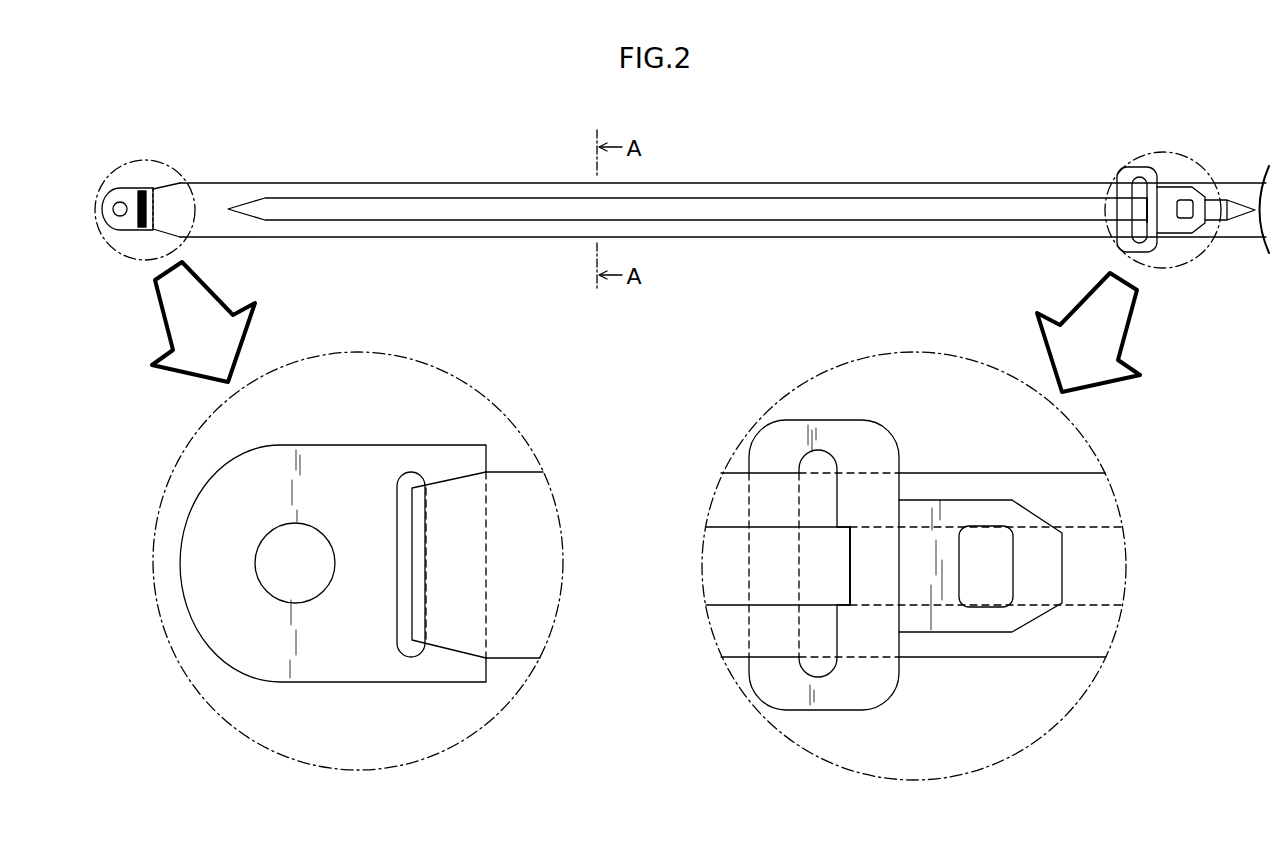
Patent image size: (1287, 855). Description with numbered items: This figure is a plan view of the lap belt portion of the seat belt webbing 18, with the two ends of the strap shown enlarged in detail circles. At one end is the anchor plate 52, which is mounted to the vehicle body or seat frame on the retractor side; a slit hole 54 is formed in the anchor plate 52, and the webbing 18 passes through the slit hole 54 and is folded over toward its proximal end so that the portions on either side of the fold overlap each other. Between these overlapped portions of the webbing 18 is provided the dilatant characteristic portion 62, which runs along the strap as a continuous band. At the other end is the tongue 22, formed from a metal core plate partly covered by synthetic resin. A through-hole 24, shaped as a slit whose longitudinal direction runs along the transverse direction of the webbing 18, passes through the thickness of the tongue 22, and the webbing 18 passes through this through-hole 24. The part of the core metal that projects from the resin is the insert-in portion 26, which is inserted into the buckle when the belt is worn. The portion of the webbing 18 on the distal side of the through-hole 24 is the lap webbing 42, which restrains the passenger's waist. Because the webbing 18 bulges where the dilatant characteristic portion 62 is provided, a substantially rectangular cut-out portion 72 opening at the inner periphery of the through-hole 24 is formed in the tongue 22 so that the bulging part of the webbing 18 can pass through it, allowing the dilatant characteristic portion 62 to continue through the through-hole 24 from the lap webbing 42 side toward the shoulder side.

The tongue 22 is at (1135, 170).
The through-hole 24 is at (1133, 228).
The insert-in portion 26 is at (1183, 192).
The lap webbing 42 is at (724, 449).
The webbing 18 is at (756, 227).
The anchor plate 52 is at (117, 224).
The slit hole 54 is at (145, 207).
The dilatant characteristic portion 62 is at (738, 210).
The cut-out portion 72 is at (1147, 200).